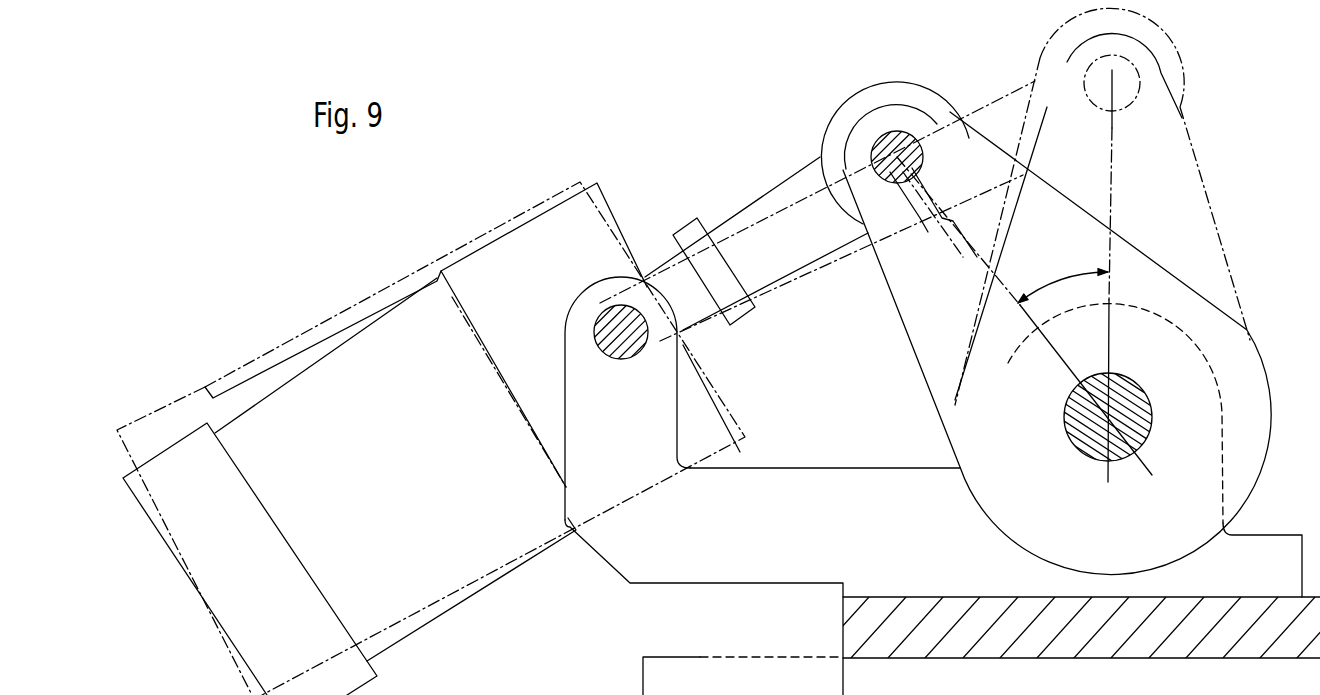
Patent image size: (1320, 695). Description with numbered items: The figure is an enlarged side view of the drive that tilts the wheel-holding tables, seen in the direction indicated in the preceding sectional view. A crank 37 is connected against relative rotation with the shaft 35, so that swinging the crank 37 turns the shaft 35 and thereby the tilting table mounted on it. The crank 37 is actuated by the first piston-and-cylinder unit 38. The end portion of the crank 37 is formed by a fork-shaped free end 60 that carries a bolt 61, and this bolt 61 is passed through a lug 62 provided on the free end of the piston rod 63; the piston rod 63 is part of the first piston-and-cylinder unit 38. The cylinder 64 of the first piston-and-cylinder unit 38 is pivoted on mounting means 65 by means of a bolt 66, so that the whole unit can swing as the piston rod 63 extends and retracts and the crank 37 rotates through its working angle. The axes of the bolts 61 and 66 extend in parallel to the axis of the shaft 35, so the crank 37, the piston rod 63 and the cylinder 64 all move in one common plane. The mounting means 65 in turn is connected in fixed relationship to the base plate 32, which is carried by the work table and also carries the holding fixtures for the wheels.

The base plate 32 is at (967, 603).
The shaft 35 is at (1147, 427).
The crank 37 is at (1142, 267).
The first piston-and-cylinder unit 38 is at (643, 180).
The fork-shaped free end 60 is at (868, 122).
The bolt 61 is at (915, 153).
The lug 62 is at (933, 100).
The piston rod 63 is at (753, 205).
The cylinder 64 is at (306, 390).
The mounting means 65 is at (882, 488).
The bolt 66 is at (623, 352).